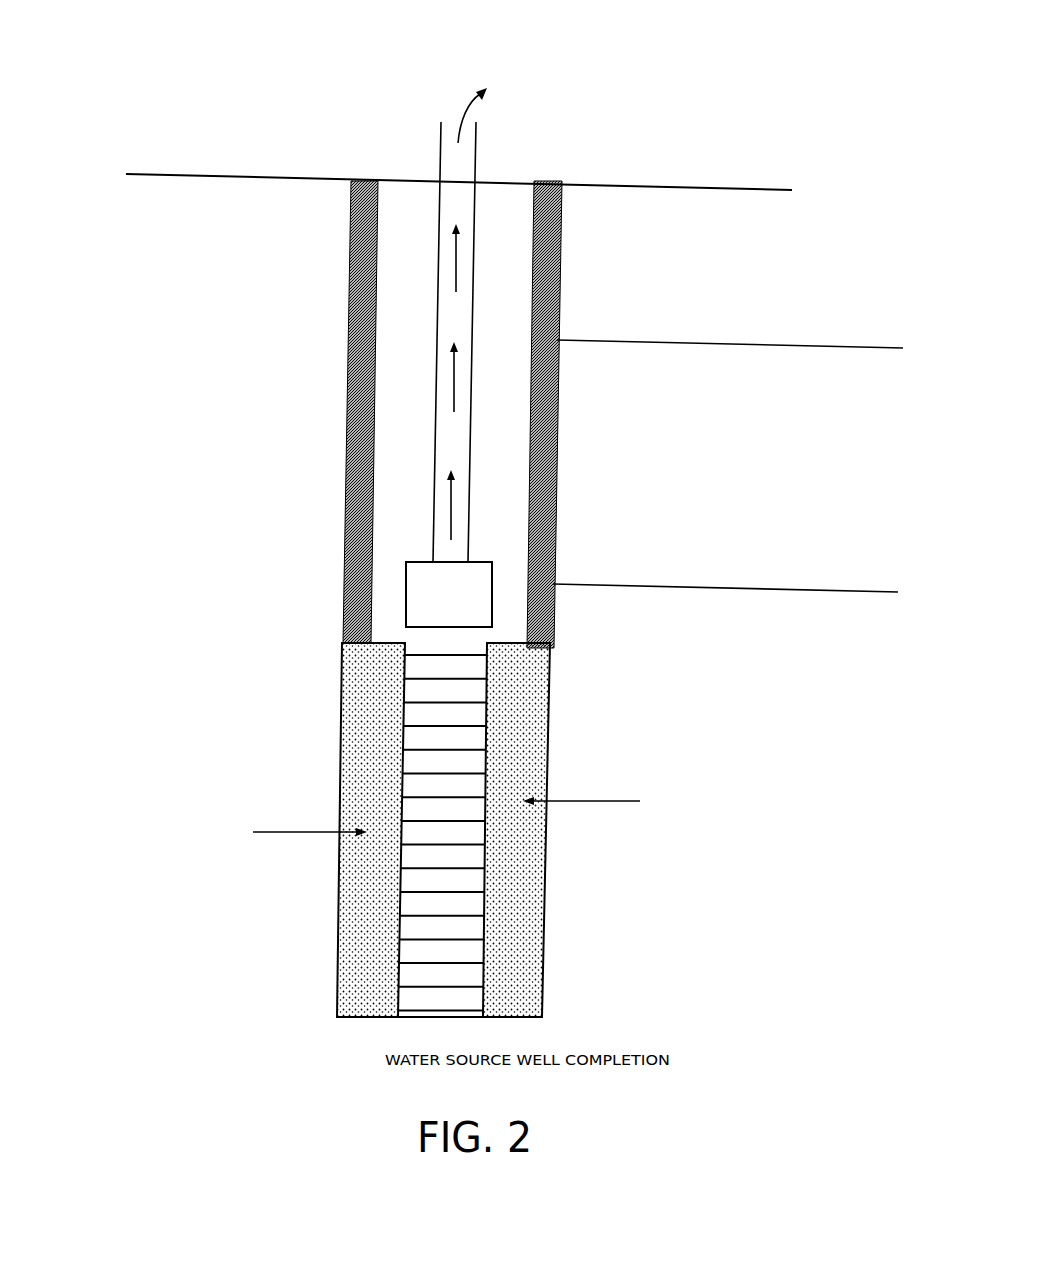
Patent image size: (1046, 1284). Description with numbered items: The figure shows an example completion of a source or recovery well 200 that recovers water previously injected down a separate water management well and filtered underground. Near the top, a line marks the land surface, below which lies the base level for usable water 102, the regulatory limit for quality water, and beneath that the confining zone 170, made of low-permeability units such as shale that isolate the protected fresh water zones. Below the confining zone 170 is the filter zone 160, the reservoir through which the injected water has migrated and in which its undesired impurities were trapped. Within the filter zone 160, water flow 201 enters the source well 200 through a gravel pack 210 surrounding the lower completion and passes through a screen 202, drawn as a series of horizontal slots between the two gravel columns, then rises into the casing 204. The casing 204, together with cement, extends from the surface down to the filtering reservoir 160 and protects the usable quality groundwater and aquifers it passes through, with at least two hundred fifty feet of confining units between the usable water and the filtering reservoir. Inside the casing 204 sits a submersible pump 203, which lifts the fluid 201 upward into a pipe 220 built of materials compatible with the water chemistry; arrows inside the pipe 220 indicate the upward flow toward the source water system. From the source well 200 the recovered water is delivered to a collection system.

The source well 200 is at (268, 98).
The pipe 220 is at (424, 413).
The submersible pump 203 is at (397, 594).
The base level for usable water 102 is at (730, 354).
The confining zone 170 is at (725, 558).
The filter zone 160 is at (443, 703).
The gravel pack 210 is at (511, 830).
The water flow 201 is at (455, 801).
The casing 204 is at (540, 925).
The screen 202 is at (540, 1018).